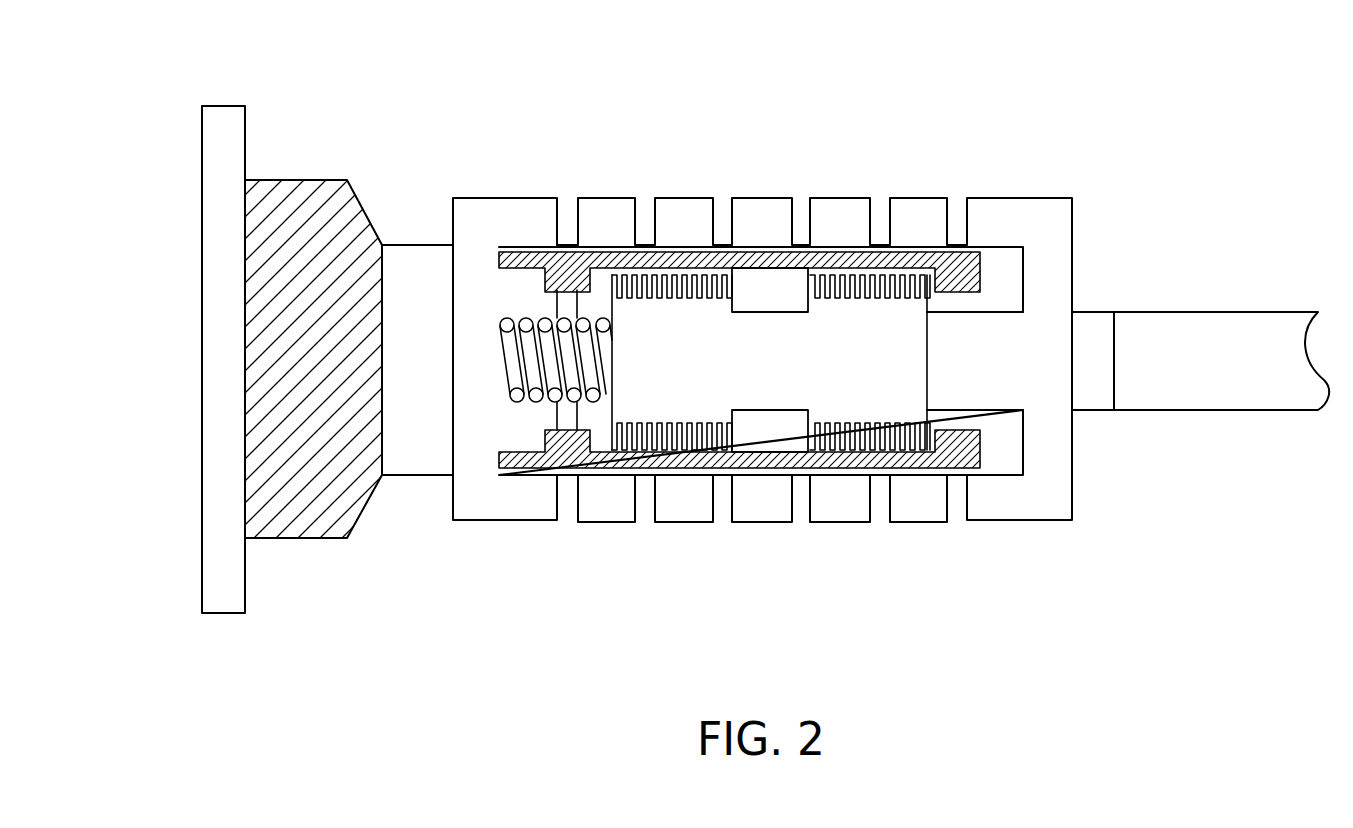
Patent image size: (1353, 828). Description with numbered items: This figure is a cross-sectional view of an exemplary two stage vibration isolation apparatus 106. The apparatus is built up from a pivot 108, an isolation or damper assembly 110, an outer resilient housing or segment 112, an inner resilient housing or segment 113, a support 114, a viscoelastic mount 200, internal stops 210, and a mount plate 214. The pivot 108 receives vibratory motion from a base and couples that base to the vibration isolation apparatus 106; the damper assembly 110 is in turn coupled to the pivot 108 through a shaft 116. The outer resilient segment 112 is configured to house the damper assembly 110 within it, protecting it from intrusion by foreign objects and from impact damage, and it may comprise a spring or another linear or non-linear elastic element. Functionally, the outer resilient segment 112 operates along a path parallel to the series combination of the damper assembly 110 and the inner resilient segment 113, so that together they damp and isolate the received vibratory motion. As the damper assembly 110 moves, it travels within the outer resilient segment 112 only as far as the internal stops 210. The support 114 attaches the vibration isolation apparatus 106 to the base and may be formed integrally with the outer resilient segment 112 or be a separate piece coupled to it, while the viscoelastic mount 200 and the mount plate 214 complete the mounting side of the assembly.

The vibration isolation apparatus 106 is at (729, 322).
The pivot 108 is at (1205, 400).
The damper assembly 110 is at (787, 379).
The outer resilient segment 112 is at (758, 516).
The inner resilient segment 113 is at (610, 325).
The support 114 is at (430, 475).
The shaft 116 is at (1096, 318).
The viscoelastic mount 200 is at (304, 182).
The internal stops 210 is at (568, 250).
The mount plate 214 is at (208, 178).